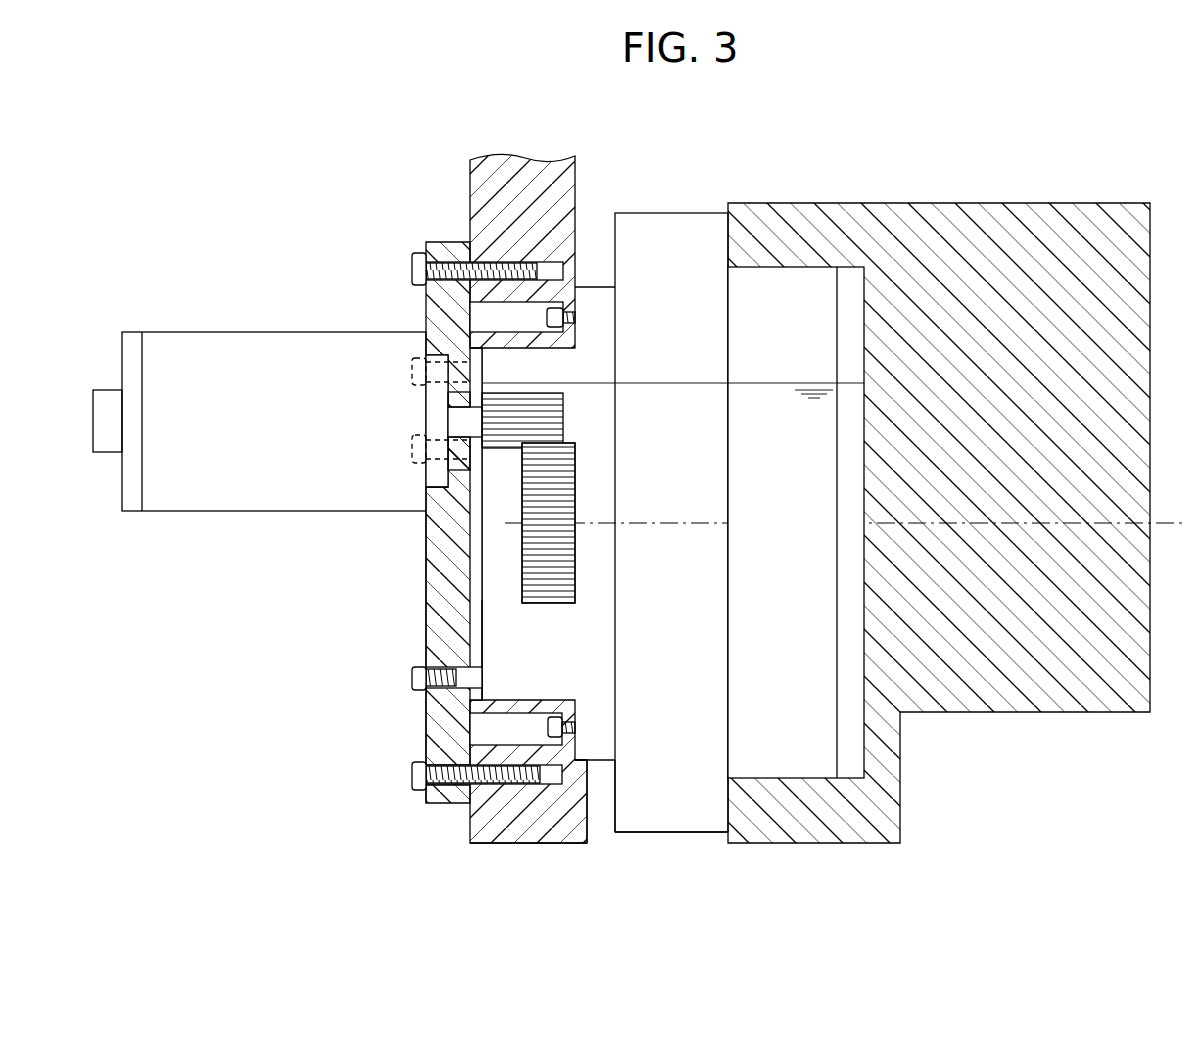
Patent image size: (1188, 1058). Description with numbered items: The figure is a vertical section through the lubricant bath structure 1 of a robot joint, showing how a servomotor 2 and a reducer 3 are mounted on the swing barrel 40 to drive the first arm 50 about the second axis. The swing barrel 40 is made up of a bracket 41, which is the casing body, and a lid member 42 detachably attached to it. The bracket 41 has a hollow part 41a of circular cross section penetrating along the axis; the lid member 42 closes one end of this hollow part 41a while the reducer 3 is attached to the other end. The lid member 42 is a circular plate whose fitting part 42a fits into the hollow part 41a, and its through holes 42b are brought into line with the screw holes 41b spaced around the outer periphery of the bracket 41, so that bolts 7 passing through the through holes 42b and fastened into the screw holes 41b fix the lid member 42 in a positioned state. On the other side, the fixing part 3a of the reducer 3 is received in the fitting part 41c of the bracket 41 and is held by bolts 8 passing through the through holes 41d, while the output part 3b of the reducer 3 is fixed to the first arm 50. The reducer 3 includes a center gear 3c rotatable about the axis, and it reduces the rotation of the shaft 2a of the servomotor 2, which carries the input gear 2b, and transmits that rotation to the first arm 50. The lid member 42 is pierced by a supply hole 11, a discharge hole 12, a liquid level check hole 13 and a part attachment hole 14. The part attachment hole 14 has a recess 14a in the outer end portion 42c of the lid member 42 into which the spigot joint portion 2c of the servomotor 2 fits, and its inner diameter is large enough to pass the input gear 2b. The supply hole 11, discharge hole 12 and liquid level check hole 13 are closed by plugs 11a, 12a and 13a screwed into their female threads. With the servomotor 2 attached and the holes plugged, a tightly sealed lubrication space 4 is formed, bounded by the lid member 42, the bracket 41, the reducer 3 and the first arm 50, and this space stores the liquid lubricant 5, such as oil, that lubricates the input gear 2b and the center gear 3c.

The lubricant bath structure 1 is at (262, 148).
The servomotor 2 is at (195, 331).
The shaft 2a is at (448, 412).
The input gear 2b is at (565, 418).
The spigot joint portion 2c is at (427, 347).
The reducer 3 is at (670, 213).
The fixing part 3a is at (603, 764).
The output part 3b is at (686, 834).
The center gear 3c is at (556, 603).
The lubrication space 4 is at (850, 745).
The lubricant 5 is at (784, 383).
The bolts 7 is at (412, 776).
The bolts 8 is at (546, 316).
The supply hole 11 is at (470, 376).
The plug 11a is at (412, 368).
The discharge hole 12 is at (478, 683).
The plug 12a is at (412, 678).
The liquid level check hole 13 is at (455, 453).
The plug 13a is at (412, 455).
The part attachment hole 14 is at (447, 403).
The recess 14a is at (437, 482).
The swing barrel 40 is at (470, 178).
The bracket 41 is at (576, 185).
The hollow part 41a is at (546, 704).
The screw holes 41b is at (546, 775).
The fitting part 41c is at (588, 747).
The through holes 41d is at (585, 318).
The lid member 42 is at (410, 632).
The fitting part 42a is at (484, 692).
The through holes 42b is at (455, 790).
The end portion 42c is at (426, 580).
The first arm 50 is at (868, 203).